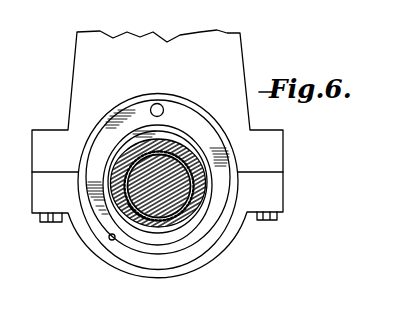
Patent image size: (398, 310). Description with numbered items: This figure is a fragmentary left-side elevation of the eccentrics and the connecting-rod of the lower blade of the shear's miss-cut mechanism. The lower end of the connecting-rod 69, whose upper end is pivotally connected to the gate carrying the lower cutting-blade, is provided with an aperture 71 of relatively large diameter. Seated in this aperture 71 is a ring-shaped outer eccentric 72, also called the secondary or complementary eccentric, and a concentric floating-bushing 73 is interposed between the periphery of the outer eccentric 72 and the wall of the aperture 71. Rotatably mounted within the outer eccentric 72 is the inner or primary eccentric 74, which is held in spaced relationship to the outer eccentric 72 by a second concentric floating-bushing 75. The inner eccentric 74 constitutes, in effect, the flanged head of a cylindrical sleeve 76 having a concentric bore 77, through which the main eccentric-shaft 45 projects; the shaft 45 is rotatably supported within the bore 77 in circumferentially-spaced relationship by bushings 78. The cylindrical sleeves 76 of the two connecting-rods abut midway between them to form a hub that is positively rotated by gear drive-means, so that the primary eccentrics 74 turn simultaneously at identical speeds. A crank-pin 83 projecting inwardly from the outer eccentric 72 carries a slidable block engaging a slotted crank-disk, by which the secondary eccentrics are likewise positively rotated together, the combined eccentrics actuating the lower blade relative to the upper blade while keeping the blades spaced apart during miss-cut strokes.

The connecting-rod 69 is at (77, 58).
The outer eccentric 72 is at (118, 117).
The floating-bushing 73 is at (100, 122).
The inner eccentric 74 is at (172, 133).
The floating-bushing 75 is at (190, 139).
The cylindrical sleeve 76 is at (190, 210).
The concentric bore 77 is at (167, 219).
The bushing 78 is at (140, 219).
The main eccentric-shaft 45 is at (154, 214).
The aperture 71 is at (112, 241).
The crank-pin 83 is at (157, 103).